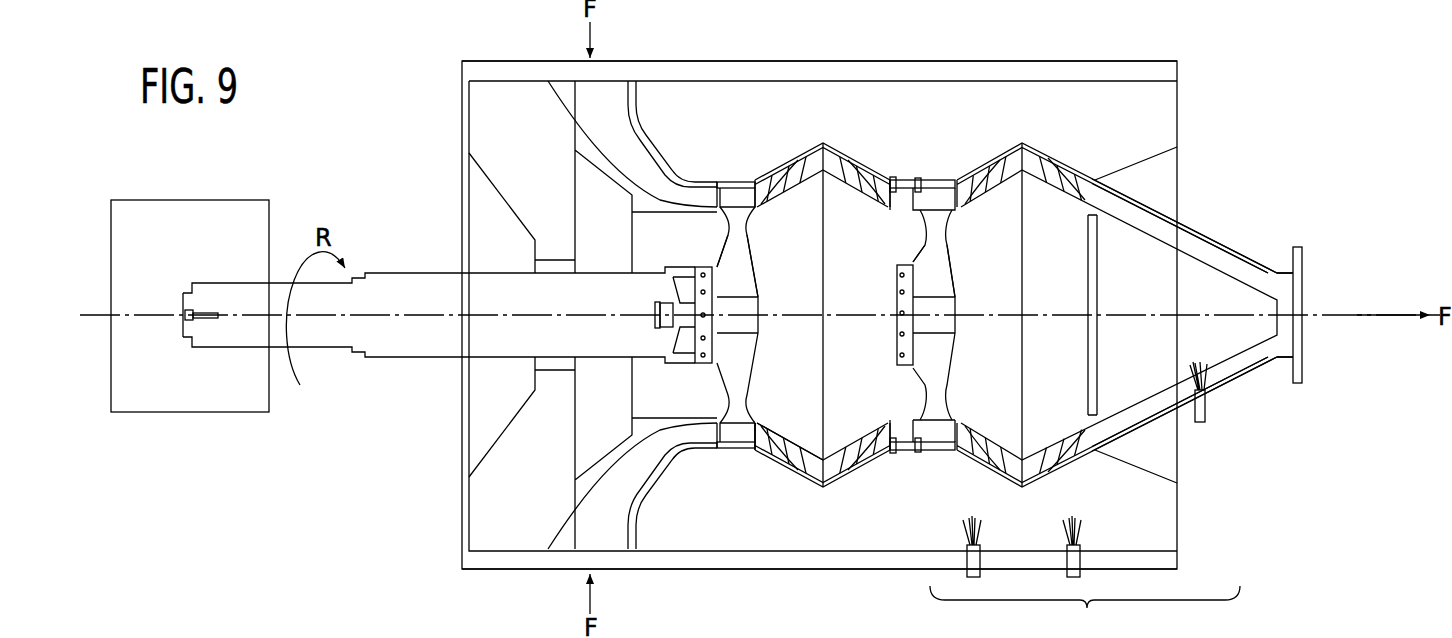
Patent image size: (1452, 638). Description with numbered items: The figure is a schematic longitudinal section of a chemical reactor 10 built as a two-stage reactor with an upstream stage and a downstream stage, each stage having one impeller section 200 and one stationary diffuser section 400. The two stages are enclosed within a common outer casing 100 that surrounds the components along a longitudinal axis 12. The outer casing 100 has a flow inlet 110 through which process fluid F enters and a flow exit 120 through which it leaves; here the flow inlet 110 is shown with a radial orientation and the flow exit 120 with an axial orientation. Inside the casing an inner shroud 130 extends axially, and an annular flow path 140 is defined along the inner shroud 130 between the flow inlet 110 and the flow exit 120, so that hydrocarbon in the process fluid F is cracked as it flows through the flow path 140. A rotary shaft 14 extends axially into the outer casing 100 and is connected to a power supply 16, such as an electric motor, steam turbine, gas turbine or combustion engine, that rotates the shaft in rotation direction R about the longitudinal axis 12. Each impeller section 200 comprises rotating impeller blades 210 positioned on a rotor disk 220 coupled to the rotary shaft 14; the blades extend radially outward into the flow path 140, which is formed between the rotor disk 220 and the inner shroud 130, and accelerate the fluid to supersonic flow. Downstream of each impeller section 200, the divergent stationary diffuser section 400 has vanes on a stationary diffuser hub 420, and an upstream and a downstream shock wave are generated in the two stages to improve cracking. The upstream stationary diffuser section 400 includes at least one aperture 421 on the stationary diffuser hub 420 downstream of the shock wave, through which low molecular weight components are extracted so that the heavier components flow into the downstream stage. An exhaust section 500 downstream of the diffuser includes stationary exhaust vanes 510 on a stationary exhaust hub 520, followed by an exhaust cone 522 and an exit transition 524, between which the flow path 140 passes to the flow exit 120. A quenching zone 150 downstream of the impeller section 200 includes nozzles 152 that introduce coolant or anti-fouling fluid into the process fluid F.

The chemical reactor 10 is at (1307, 88).
The longitudinal axis 12 is at (420, 318).
The rotary shaft 14 is at (427, 358).
The power supply 16 is at (190, 198).
The outer casing 100 is at (808, 60).
The flow inlet 110 is at (572, 60).
The flow exit 120 is at (1310, 290).
The inner shroud 130 is at (813, 143).
The flow path 140 is at (698, 198).
The quenching zone 150 is at (1087, 604).
The nozzle 152 is at (1230, 434).
The impeller section 200 is at (737, 182).
The rotating impeller blades 210 is at (745, 222).
The rotor disk 220 is at (742, 278).
The stationary diffuser section 400 is at (796, 165).
The stationary diffuser hub 420 is at (760, 452).
The aperture 421 is at (799, 187).
The exhaust section 500 is at (1069, 165).
The stationary exhaust vanes 510 is at (862, 195).
The stationary exhaust hub 520 is at (1057, 277).
The exhaust cone 522 is at (1205, 343).
The exit transition 524 is at (1200, 230).